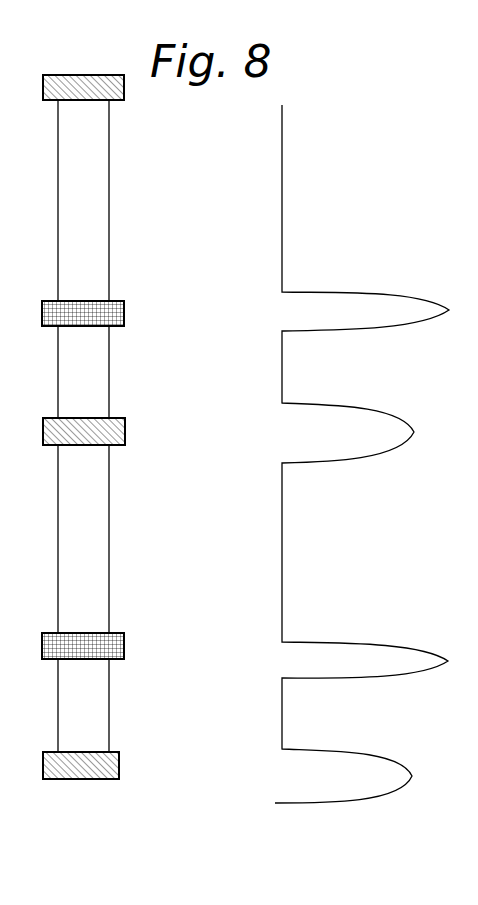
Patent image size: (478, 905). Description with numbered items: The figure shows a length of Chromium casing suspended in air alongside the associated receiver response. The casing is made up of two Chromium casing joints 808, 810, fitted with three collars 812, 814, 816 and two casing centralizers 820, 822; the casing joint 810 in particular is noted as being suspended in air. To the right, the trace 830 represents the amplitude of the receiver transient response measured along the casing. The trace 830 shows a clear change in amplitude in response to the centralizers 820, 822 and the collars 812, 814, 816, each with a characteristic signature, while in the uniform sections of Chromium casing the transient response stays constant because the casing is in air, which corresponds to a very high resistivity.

The Chromium casing joint 808 is at (93, 190).
The Chromium casing joint 810 is at (94, 545).
The collar 812 is at (117, 93).
The collar 814 is at (116, 438).
The collar 816 is at (110, 762).
The casing centralizer 820 is at (110, 312).
The casing centralizer 822 is at (111, 648).
The trace 830 is at (282, 213).